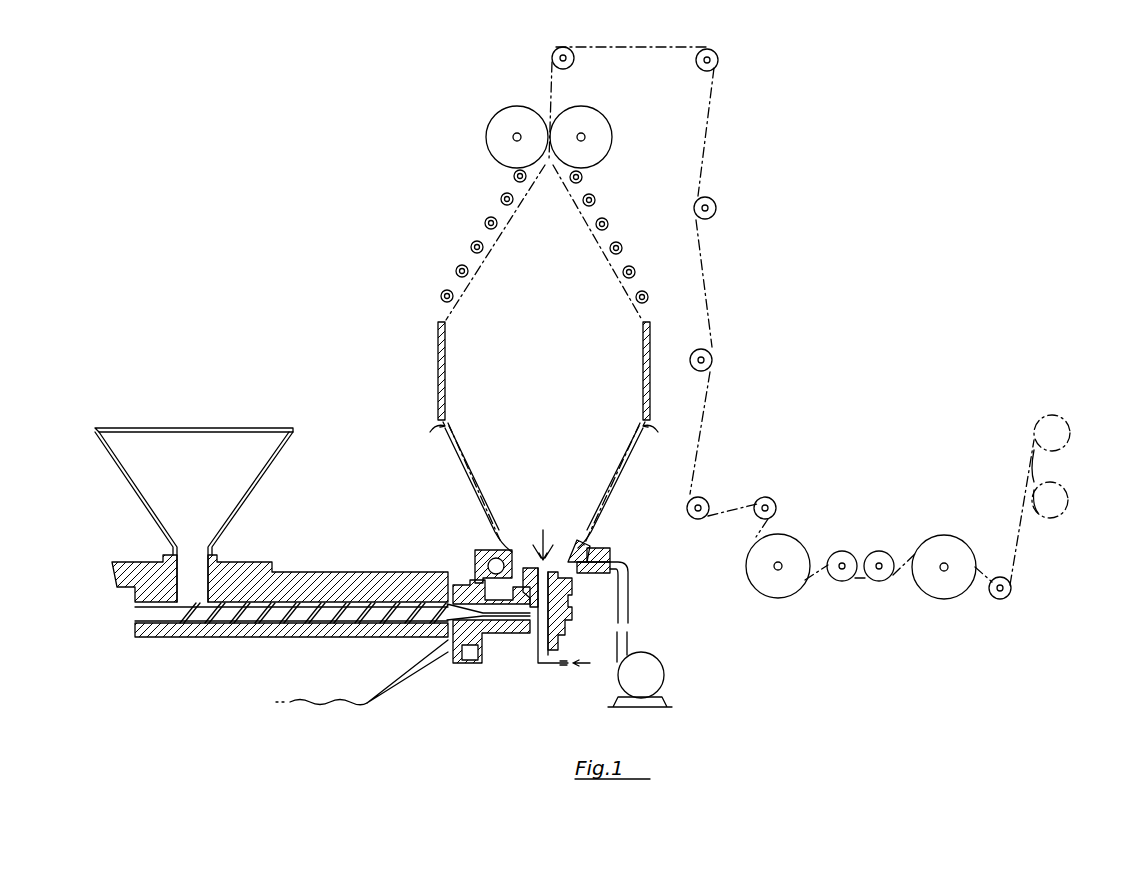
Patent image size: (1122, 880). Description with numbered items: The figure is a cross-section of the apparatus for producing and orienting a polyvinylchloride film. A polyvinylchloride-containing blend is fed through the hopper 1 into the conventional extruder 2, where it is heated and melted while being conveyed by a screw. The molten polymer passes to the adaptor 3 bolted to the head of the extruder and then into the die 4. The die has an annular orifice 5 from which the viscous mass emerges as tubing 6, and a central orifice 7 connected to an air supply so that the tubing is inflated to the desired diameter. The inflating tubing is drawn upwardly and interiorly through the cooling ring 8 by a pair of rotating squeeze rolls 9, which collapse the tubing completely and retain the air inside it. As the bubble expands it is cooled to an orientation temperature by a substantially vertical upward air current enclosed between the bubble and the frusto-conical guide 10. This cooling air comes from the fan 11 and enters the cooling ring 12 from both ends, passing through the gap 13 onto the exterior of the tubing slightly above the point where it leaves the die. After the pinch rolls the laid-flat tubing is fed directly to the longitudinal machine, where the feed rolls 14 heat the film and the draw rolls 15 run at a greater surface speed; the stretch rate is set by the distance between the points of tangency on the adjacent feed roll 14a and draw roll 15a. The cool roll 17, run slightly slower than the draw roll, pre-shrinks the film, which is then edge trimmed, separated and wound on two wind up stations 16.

The hopper 1 is at (195, 442).
The extruder 2 is at (302, 592).
The adaptor 3 is at (493, 628).
The die 4 is at (562, 620).
The annular orifice 5 is at (570, 600).
The tubing 6 is at (582, 577).
The central orifice 7 is at (547, 665).
The cooling ring 8 is at (437, 362).
The squeeze rolls 9 is at (568, 117).
The frusto-conical guide 10 is at (468, 478).
The fan 11 is at (653, 681).
The cooling ring 12 is at (590, 552).
The gap 13 is at (610, 553).
The feed rolls 14 is at (785, 583).
The feed roll 14a is at (842, 557).
The draw rolls 15 is at (937, 585).
The draw roll 15a is at (880, 557).
The wind up stations 16 is at (1058, 447).
The cool roll 17 is at (1000, 600).